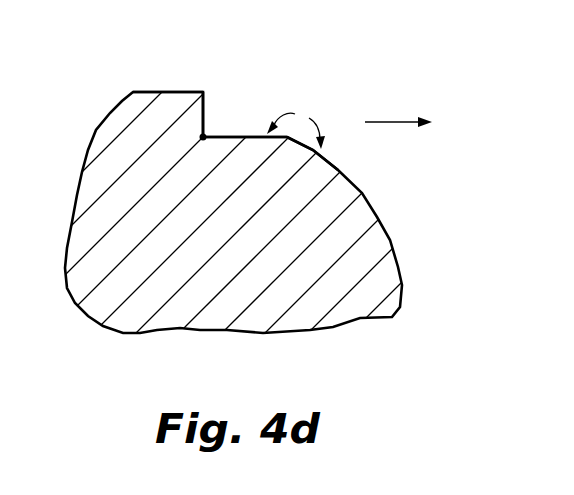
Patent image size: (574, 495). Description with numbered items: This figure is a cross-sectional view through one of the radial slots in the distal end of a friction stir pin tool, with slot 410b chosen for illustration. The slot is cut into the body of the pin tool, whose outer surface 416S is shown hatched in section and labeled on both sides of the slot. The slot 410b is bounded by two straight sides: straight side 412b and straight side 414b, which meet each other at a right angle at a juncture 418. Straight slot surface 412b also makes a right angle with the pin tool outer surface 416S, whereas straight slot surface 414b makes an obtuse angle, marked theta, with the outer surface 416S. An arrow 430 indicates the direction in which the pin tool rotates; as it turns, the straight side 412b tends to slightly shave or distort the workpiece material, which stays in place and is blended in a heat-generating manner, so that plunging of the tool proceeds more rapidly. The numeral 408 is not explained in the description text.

The outer surface 416S is at (165, 92).
The straight side 412b is at (205, 100).
The top face 408 is at (208, 130).
The juncture 418 is at (202, 142).
The straight side 414b is at (244, 136).
The radial slot 410b is at (301, 62).
The arrow 430 is at (390, 122).